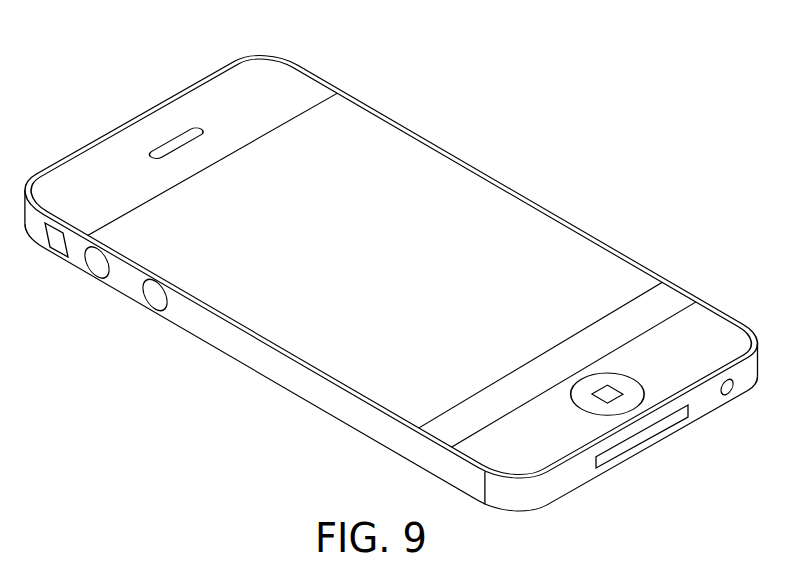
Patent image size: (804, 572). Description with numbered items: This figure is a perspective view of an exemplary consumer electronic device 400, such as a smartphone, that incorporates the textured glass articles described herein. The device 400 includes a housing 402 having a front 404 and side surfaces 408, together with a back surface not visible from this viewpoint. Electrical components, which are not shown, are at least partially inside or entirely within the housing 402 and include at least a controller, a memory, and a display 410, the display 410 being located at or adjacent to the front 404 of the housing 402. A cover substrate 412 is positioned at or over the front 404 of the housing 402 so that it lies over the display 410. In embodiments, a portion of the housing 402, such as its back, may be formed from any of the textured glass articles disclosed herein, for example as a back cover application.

The consumer electronic device 400 is at (389, 273).
The housing 402 is at (298, 81).
The front surface 404 is at (717, 323).
The side surfaces 408 is at (286, 380).
The display 410 is at (402, 274).
The cover substrate 412 is at (428, 153).